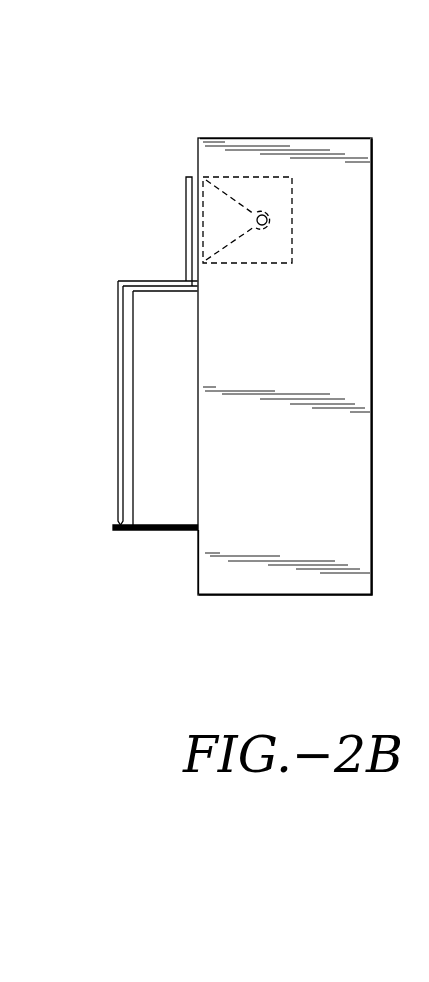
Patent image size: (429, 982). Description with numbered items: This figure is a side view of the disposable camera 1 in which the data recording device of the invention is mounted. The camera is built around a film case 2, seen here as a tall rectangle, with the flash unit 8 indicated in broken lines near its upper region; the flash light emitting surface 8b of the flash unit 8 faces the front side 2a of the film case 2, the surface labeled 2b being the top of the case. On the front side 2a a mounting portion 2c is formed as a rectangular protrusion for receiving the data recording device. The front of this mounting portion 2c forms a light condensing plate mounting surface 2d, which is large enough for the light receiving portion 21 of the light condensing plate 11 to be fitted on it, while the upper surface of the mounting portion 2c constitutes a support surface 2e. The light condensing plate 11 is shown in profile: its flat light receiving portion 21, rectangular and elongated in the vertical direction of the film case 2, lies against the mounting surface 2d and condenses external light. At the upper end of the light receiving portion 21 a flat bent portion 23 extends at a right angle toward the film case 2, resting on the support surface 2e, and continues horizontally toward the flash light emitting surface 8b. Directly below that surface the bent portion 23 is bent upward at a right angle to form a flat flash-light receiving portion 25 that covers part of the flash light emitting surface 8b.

The disposable camera 1 is at (298, 93).
The film case 2 is at (270, 597).
The front side 2a is at (199, 576).
The top surface of housing 2b is at (337, 137).
The mounting portion 2c is at (161, 503).
The light condensing plate mounting surface 2d is at (128, 470).
The support surface 2e is at (147, 290).
The flash unit 8 is at (291, 238).
The flash light emitting surface 8b is at (186, 200).
The light condensing plate 11 is at (142, 244).
The light receiving portion 21 is at (119, 393).
The bent portion 23 is at (168, 279).
The flash-light receiving portion 25 is at (187, 205).